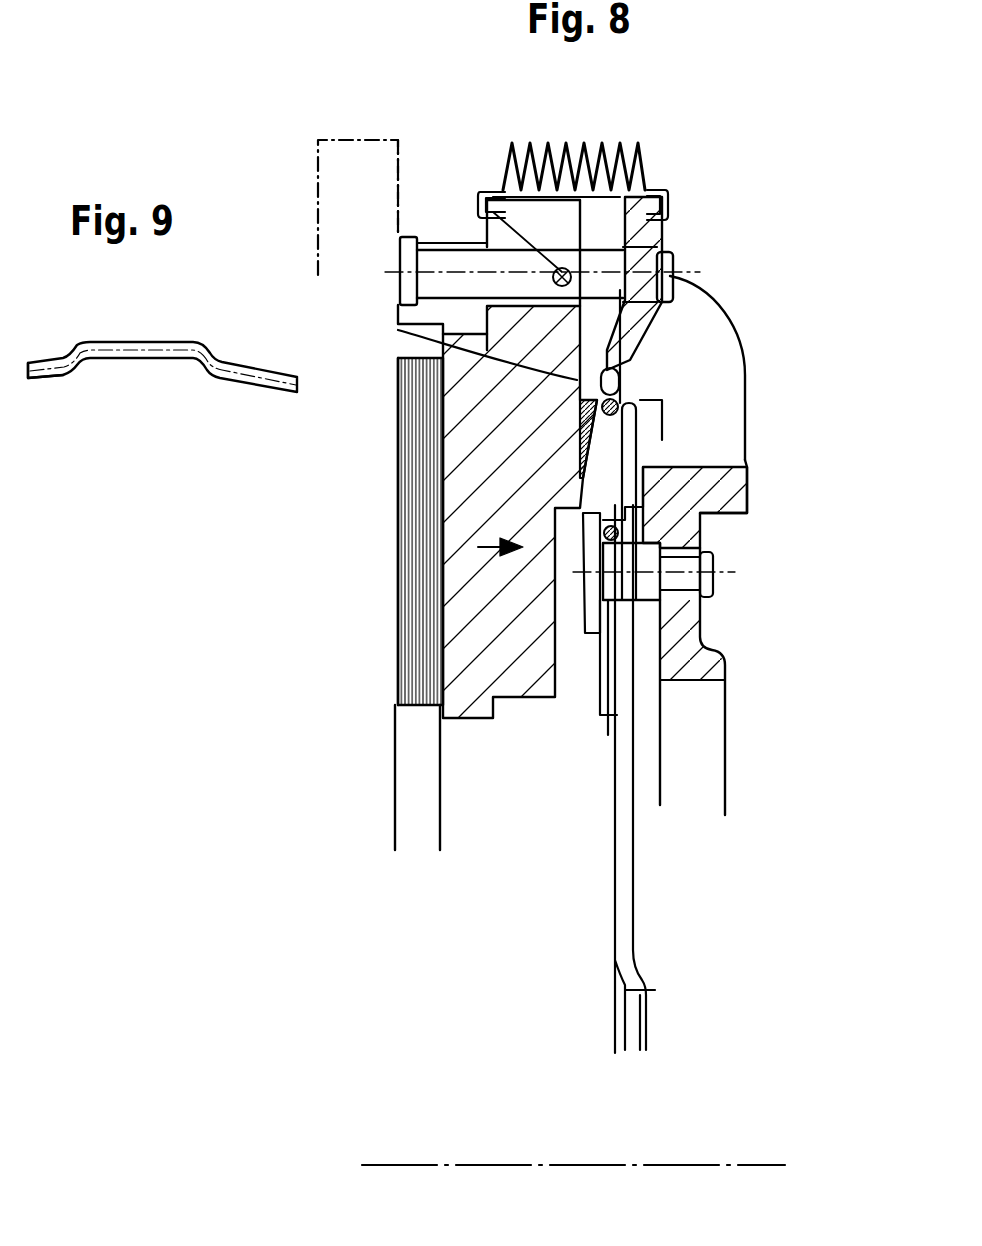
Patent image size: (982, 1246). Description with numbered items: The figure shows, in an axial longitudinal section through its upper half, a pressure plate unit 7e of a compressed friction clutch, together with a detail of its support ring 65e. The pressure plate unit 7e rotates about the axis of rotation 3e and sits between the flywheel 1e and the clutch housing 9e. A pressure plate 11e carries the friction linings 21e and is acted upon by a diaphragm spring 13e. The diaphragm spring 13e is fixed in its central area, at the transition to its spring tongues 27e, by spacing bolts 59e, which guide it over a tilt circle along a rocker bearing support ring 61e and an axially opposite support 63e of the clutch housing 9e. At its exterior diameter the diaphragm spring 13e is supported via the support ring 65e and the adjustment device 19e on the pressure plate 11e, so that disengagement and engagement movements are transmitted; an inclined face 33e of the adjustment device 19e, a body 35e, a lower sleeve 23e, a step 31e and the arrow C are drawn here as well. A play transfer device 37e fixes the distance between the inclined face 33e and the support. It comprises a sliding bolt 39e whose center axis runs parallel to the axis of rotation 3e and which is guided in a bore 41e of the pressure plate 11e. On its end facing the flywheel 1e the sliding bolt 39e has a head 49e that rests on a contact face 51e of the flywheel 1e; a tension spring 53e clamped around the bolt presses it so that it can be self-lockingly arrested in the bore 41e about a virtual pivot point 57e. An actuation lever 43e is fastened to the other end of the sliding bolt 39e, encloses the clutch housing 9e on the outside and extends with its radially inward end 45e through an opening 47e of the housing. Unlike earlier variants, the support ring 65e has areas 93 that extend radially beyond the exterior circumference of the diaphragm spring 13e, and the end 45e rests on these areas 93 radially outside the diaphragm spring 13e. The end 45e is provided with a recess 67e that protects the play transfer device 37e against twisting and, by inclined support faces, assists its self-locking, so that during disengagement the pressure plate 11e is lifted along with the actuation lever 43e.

In FIG. 8, the flywheel 1e is at (327, 162).
In FIG. 8, the axis of rotation 3e is at (543, 1165).
In FIG. 8, the pressure plate unit 7e is at (728, 138).
In FIG. 8, the clutch housing 9e is at (677, 618).
In FIG. 8, the pressure plate 11e is at (467, 633).
In FIG. 8, the diaphragm spring 13e is at (660, 467).
In FIG. 8, the adjustment device 19e is at (583, 451).
In FIG. 8, the friction linings 21e is at (412, 533).
In FIG. 8, the tube 23e is at (394, 799).
In FIG. 8, the spring tongues 27e is at (630, 890).
In FIG. 8, the step 31e is at (645, 465).
In FIG. 8, the inclined face 33e is at (637, 460).
In FIG. 8, the body 35e is at (583, 478).
In FIG. 8, the play transfer device 37e is at (672, 230).
In FIG. 8, the sliding bolt 39e is at (438, 272).
In FIG. 8, the bore 41e is at (650, 247).
In FIG. 8, the actuation lever 43e is at (655, 323).
In FIG. 8, the end 45e is at (745, 370).
In FIG. 8, the opening 47e is at (655, 410).
In FIG. 8, the head 49e is at (410, 260).
In FIG. 8, the contact face 51e is at (405, 160).
In FIG. 8, the tension spring 53e is at (587, 143).
In FIG. 8, the pivot point 57e is at (487, 192).
In FIG. 8, the spacing bolt 59e is at (637, 588).
In FIG. 8, the support ring 61e is at (650, 520).
In FIG. 8, the support 63e is at (630, 538).
In FIG. 8, the support ring 65e is at (627, 398).
In FIG. 9, the support ring 65e is at (40, 377).
In FIG. 8, the recess 67e is at (620, 370).
In FIG. 8, the area 93 is at (398, 330).
In FIG. 9, the area 93 is at (140, 340).
In FIG. 8, the direction arrow C is at (478, 548).